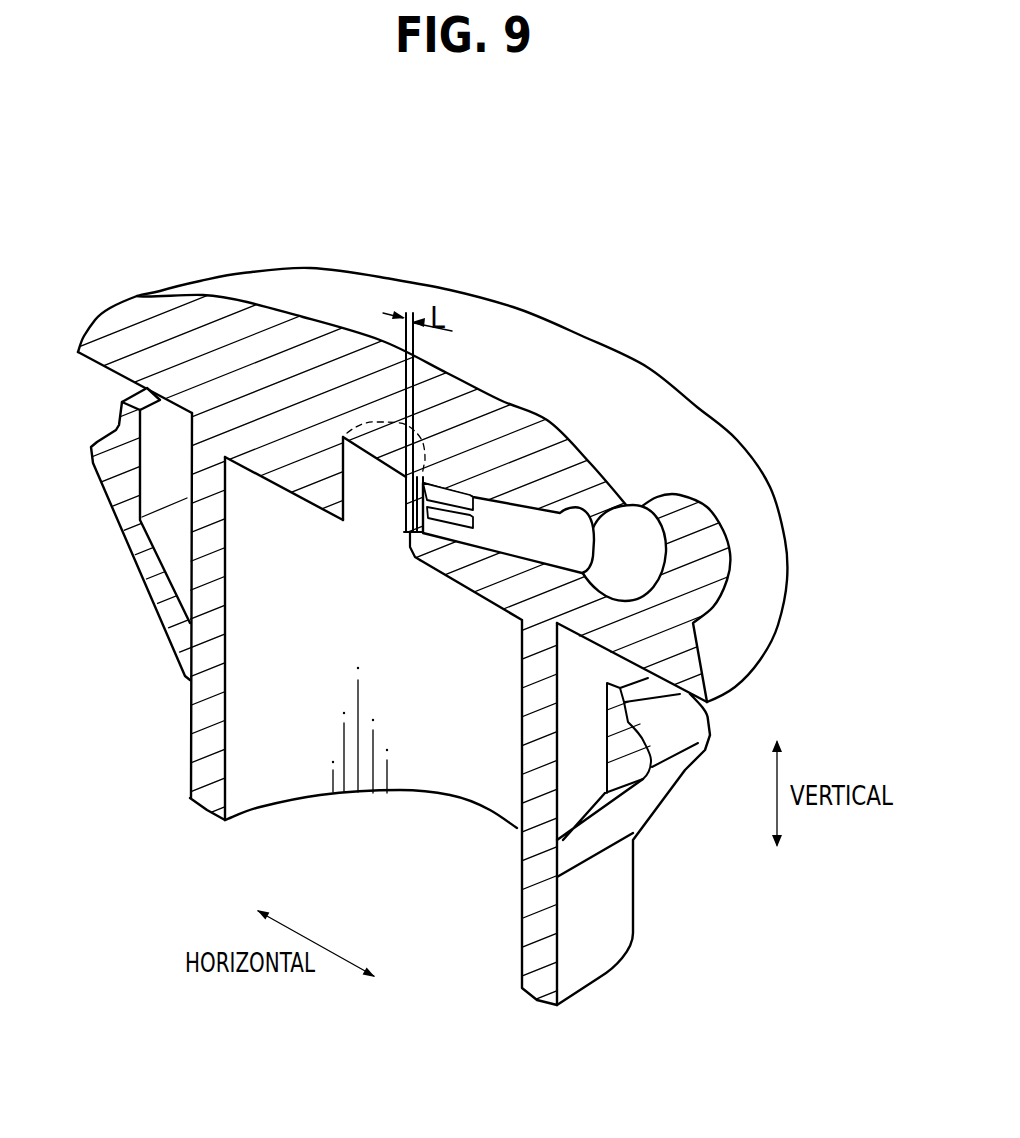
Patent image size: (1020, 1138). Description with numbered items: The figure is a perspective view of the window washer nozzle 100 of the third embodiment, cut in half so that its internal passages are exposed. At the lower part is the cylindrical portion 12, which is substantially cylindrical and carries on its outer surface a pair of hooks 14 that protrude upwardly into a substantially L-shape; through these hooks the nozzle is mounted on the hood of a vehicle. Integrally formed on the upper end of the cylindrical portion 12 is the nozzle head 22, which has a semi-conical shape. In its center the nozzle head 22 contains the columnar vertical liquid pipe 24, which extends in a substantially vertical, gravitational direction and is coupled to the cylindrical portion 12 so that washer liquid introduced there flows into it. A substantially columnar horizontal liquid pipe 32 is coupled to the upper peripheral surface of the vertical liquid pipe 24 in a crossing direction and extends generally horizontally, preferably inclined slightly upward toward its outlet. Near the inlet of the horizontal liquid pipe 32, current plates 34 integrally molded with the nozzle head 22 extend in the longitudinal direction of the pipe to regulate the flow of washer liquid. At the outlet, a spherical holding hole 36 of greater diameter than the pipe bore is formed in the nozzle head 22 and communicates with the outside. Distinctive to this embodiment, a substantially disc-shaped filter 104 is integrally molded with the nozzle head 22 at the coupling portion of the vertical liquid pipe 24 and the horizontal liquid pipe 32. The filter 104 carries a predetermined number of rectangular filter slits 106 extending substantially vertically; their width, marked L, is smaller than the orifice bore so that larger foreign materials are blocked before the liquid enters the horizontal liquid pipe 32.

The window washer nozzle 100 is at (664, 230).
The nozzle head 22 is at (391, 270).
The cylindrical portion 12 is at (188, 700).
The hooks 14 is at (93, 470).
The vertical liquid pipe 24 is at (355, 472).
The horizontal liquid pipe 32 is at (530, 530).
The holding hole 36 is at (598, 498).
The current plates 34 is at (450, 517).
The filter 104 is at (398, 500).
The filter slits 106 is at (415, 556).